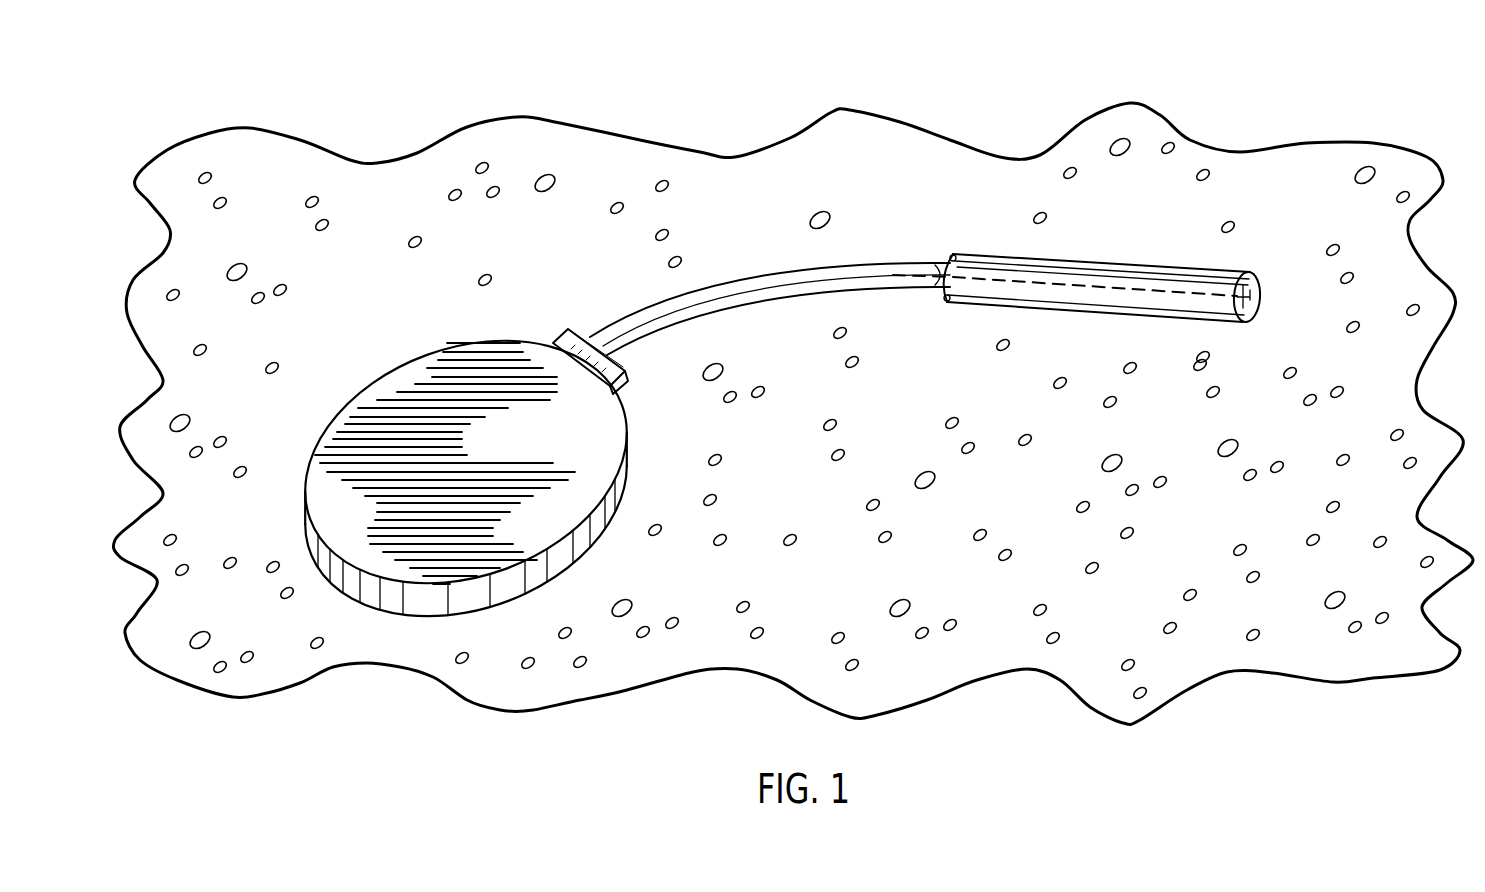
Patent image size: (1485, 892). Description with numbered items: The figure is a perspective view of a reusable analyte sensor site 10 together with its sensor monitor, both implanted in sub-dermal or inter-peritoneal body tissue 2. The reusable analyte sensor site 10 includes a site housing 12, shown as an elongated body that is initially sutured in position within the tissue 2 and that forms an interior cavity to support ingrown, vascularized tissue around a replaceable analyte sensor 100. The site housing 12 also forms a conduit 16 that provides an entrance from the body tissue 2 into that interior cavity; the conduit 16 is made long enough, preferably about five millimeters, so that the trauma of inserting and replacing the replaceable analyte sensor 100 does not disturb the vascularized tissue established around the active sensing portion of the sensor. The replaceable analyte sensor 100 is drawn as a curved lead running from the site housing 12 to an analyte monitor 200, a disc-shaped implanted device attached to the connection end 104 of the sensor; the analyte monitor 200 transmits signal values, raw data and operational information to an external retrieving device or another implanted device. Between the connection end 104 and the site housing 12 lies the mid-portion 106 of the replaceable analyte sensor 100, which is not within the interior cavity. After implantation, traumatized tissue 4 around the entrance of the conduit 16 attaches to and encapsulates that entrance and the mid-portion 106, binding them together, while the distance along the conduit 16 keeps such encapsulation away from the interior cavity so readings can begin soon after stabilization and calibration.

The body tissue 2 is at (384, 150).
The analyte monitor 200 is at (430, 400).
The connection end 104 is at (601, 331).
The replaceable analyte sensor 100 is at (748, 273).
The mid-portion 106 is at (933, 288).
The reusable analyte sensor site 10 is at (1077, 246).
The site housing 12 is at (1073, 260).
The conduit 16 is at (973, 260).
The traumatized tissue 4 is at (951, 257).